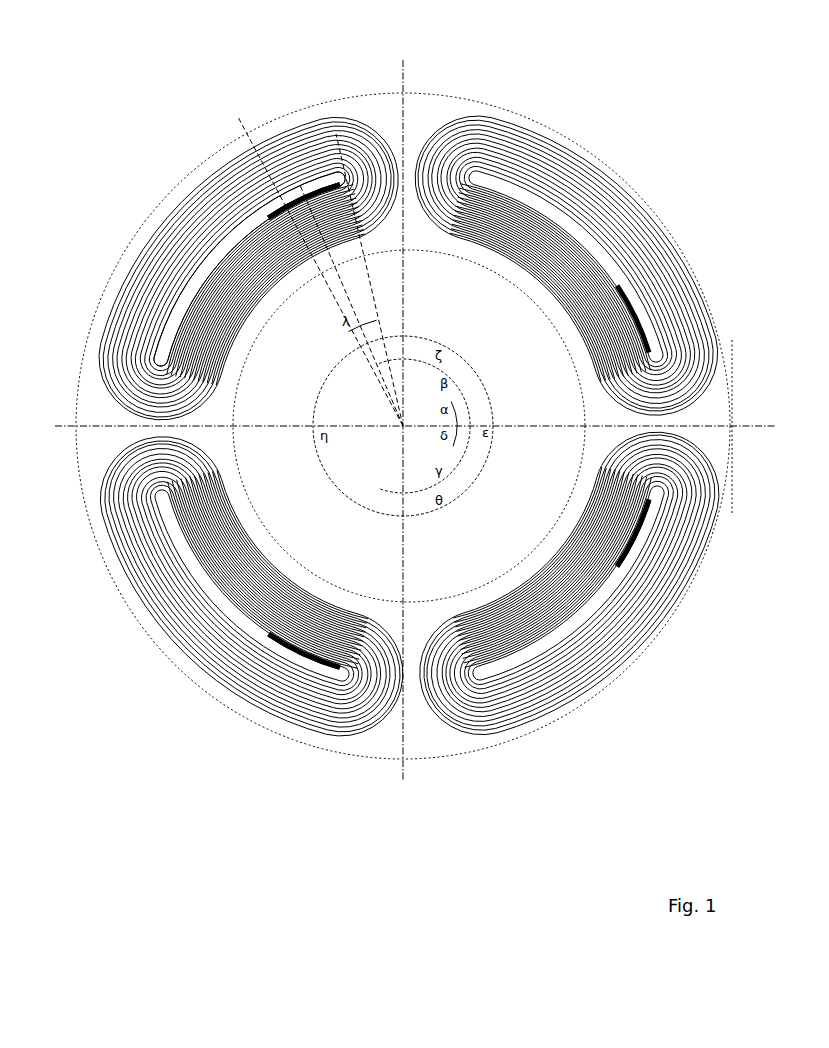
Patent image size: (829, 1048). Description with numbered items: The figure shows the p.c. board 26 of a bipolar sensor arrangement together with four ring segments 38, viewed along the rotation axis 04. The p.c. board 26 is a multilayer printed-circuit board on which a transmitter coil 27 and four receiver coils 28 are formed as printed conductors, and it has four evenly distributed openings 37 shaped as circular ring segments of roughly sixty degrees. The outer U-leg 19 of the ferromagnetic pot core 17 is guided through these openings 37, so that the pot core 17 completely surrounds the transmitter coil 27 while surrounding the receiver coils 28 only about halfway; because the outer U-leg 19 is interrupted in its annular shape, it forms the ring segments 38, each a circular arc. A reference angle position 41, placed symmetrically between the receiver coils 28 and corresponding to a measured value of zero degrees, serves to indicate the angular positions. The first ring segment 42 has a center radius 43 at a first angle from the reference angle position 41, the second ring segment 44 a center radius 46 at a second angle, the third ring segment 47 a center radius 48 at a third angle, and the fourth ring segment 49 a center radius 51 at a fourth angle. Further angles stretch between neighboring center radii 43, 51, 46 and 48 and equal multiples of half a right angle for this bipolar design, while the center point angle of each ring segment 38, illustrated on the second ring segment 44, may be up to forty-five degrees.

The rotation axis 04 is at (403, 426).
The pot core 17 is at (321, 131).
The outer U-leg 19 is at (325, 175).
The p.c. board 26 is at (210, 152).
The transmitter coil 27 is at (411, 190).
The receiver coils 28 is at (572, 163).
The openings 37 is at (197, 267).
The ring segments 38 is at (627, 573).
The reference angle position 41 is at (738, 428).
The first ring segment 42 is at (630, 280).
The center radius 43 is at (403, 426).
The second ring segment 44 is at (238, 117).
The center radius 46 is at (300, 185).
The third ring segment 47 is at (277, 650).
The center radius 48 is at (403, 426).
The fourth ring segment 49 is at (637, 557).
The center radius 51 is at (403, 426).